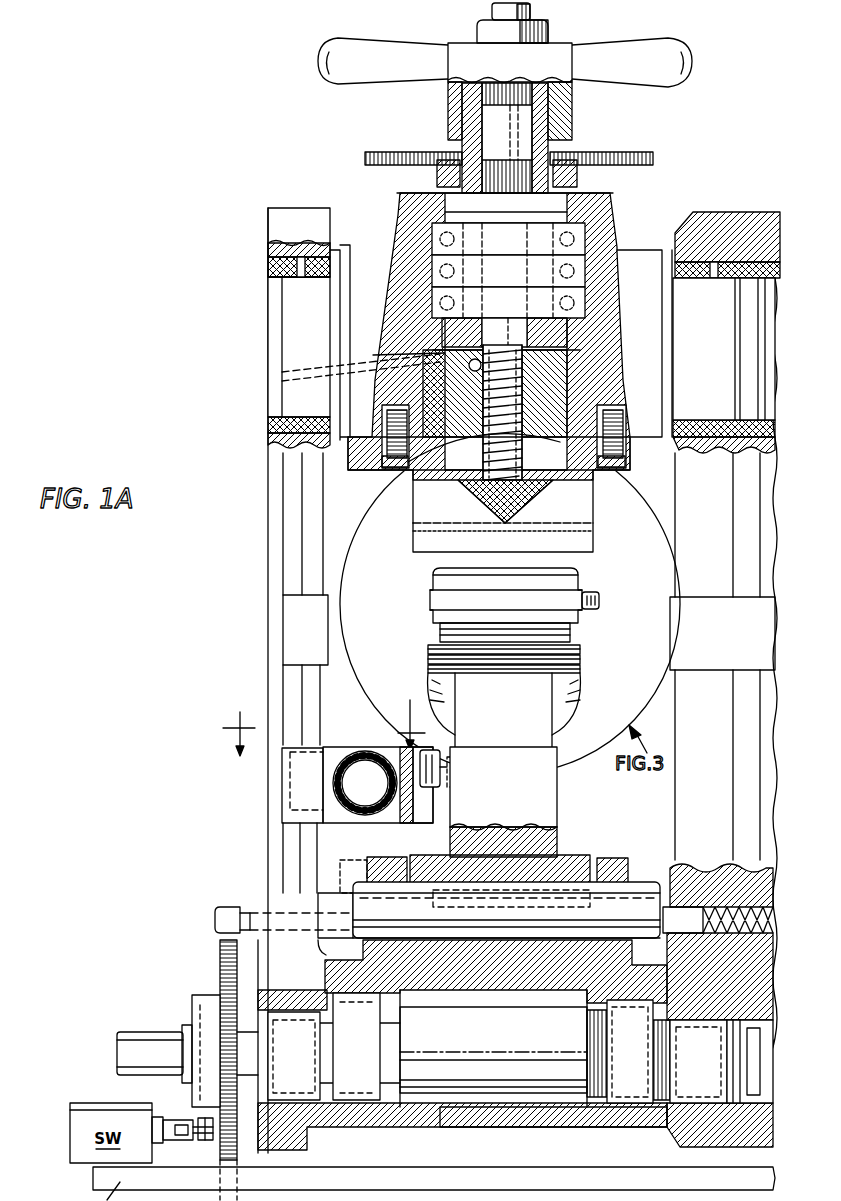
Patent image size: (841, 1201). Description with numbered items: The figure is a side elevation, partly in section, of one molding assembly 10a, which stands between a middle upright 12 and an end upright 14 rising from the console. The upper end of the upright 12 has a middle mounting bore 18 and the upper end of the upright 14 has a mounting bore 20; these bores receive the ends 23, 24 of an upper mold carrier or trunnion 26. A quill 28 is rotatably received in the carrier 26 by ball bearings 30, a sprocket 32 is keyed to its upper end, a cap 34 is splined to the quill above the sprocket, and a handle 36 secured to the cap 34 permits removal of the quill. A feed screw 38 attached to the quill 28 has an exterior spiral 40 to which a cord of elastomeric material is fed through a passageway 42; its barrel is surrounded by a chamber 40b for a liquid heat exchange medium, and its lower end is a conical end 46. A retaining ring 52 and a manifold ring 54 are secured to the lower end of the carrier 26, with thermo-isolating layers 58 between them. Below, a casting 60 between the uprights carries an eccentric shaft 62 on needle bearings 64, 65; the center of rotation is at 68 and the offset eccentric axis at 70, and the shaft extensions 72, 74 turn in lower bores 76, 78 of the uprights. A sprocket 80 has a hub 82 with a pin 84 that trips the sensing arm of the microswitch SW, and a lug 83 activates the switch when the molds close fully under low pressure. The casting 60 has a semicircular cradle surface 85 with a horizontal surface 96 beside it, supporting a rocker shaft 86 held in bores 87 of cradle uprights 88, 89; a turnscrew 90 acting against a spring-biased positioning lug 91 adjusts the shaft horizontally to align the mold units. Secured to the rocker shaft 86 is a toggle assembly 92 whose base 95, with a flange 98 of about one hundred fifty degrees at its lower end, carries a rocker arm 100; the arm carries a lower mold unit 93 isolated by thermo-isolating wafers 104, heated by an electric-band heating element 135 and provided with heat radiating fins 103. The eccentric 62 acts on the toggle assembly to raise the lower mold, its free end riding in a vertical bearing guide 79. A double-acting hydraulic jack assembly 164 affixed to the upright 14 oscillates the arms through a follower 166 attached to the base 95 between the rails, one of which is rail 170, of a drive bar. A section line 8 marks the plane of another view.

The molding assembly 10a is at (318, 160).
The middle standard or upright 12 is at (765, 706).
The end upright 14 is at (270, 655).
The middle mounting bore 18 is at (776, 272).
The mounting bore 20 is at (268, 277).
The end of upper mold carrier 23 is at (293, 347).
The end of upper mold carrier 24 is at (717, 355).
The upper mold carrier or trunnion 26 is at (638, 272).
The quill 28 is at (550, 145).
The ball bearings 30 is at (508, 270).
The sprocket 32 is at (388, 152).
The cap member 34 is at (463, 52).
The handle 36 is at (361, 52).
The feed screw 38 is at (503, 440).
The exterior spiral 40 is at (520, 413).
The chamber 40b is at (533, 403).
The passageway 42 is at (462, 387).
The conical end 46 is at (508, 507).
The retaining ring 52 is at (430, 500).
The manifold ring 54 is at (420, 540).
The thermo-isolating layers 58 is at (593, 532).
The electric-band heating element 135 is at (440, 598).
The lower mold unit 93 is at (586, 591).
The thermo-isolating wafers 104 is at (570, 632).
The heat radiating fins 103 is at (432, 665).
The rocker arm 100 is at (504, 710).
The section line 8 is at (320, 728).
The double-acting hydraulic jack assembly 164 is at (364, 744).
The follower 166 is at (430, 768).
The rail 170 is at (428, 796).
The base 95 is at (503, 802).
The toggle assembly 92 is at (546, 792).
The flange 98 is at (562, 857).
The cradle upright 88 is at (395, 858).
The vertical bearing guide 79 is at (355, 861).
The cradle upright 89 is at (610, 860).
The rocker shaft 86 is at (506, 910).
The horizontal surface 96 is at (511, 897).
The bores 87 is at (392, 882).
The turnscrew 90 is at (229, 909).
The spring-biased positioning lug 91 is at (690, 912).
The cradle surface 85 is at (496, 971).
The sprocket 80 is at (221, 958).
The hub 82 is at (208, 1012).
The shaft extension 72 is at (250, 1040).
The lower bore 76 is at (292, 1098).
The needle bearing 64 is at (360, 1075).
The casting 60 is at (486, 1122).
The center of shaft rotation 68 is at (480, 1062).
The offset eccentric axis 70 is at (522, 1056).
The eccentric shaft 62 is at (528, 1100).
The needle bearing 65 is at (635, 1075).
The lower bore 78 is at (708, 1103).
The shaft extension 74 is at (735, 1105).
The pin 84 is at (186, 1125).
The lug 83 is at (211, 1141).